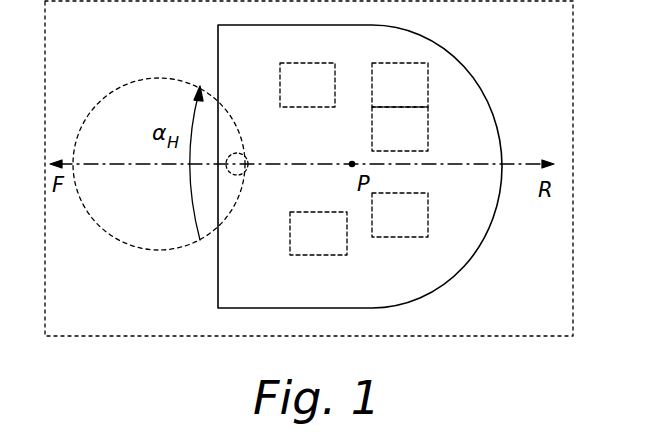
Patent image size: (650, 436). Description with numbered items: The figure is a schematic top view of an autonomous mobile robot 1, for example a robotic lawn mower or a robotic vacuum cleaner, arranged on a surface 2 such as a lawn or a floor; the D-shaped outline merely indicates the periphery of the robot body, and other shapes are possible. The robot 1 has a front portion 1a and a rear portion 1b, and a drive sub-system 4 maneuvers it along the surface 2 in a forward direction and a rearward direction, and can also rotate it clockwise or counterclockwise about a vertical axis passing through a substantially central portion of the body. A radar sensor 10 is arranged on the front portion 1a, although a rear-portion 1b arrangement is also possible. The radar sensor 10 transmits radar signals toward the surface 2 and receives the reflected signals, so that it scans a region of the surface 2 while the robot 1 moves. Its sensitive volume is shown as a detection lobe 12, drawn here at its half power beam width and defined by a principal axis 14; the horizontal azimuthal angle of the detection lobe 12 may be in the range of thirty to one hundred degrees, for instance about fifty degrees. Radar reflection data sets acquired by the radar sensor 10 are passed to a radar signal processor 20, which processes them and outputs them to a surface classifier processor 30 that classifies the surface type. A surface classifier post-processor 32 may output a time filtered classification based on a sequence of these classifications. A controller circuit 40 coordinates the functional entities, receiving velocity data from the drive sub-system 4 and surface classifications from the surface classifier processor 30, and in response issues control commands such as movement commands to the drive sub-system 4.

The autonomous mobile robot 1 is at (100, 435).
The front portion 1a is at (194, 59).
The rear portion 1b is at (473, 59).
The surface 2 is at (539, 307).
The drive sub-system 4 is at (311, 248).
The radar sensor 10 is at (240, 178).
The detection lobe 12 is at (126, 214).
The principal axis 14 is at (159, 163).
The radar signal processor 20 is at (293, 99).
The surface classifier processor 30 is at (386, 143).
The surface classifier post-processor 32 is at (386, 99).
The controller circuit 40 is at (386, 229).